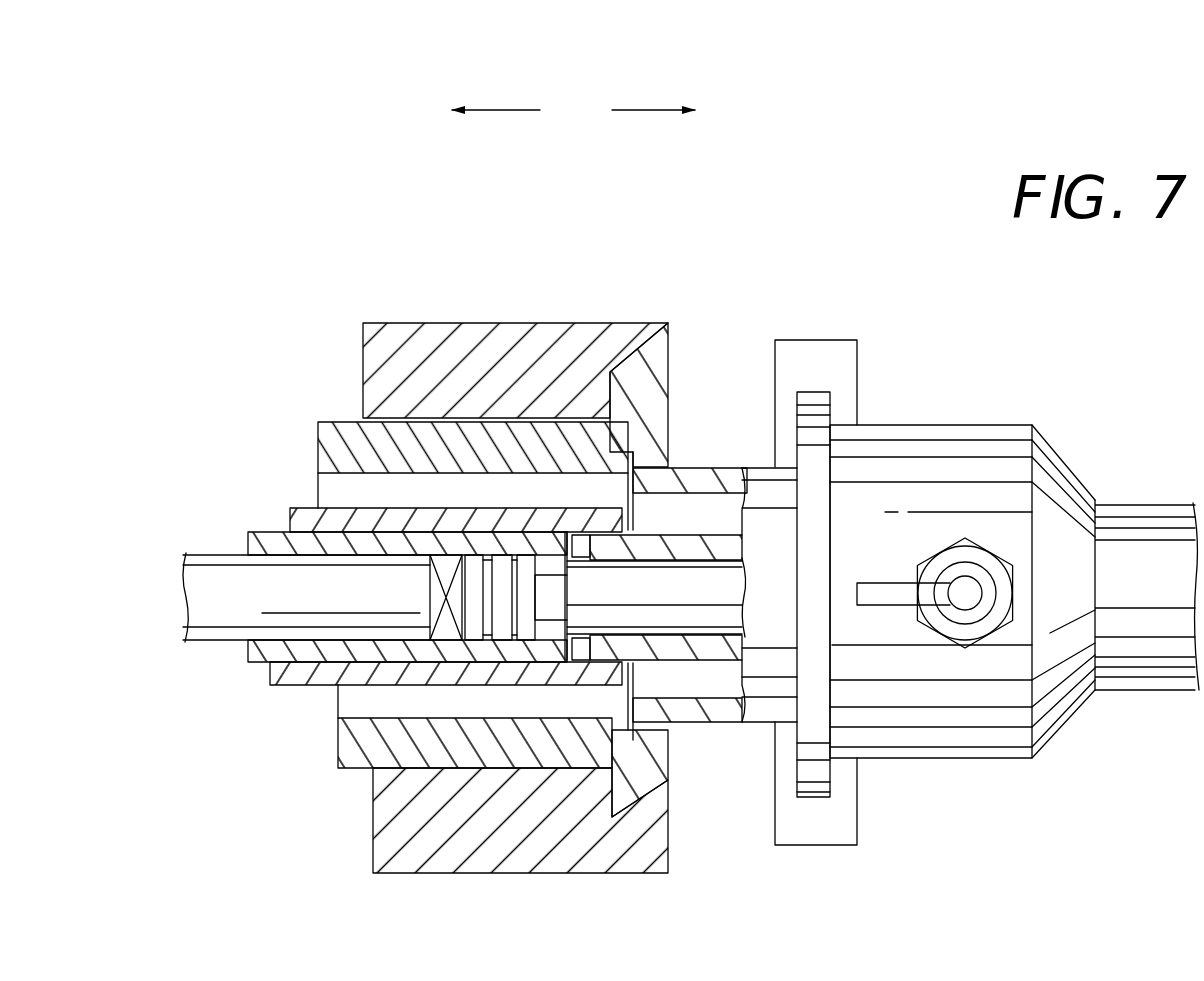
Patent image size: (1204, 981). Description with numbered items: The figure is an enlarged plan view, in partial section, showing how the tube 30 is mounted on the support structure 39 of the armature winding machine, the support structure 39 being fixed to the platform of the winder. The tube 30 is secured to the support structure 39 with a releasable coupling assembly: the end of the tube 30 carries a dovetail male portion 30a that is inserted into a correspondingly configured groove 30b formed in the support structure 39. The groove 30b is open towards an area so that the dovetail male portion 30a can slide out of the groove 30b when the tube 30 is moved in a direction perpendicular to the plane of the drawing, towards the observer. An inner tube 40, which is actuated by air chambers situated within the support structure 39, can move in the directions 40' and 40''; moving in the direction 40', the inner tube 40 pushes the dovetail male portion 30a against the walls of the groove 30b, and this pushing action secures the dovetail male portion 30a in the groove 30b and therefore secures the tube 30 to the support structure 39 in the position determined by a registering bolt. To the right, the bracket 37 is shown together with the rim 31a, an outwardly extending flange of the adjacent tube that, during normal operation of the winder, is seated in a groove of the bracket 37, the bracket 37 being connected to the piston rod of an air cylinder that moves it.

The tube 30 is at (730, 712).
The dovetail male portion 30a is at (650, 418).
The groove 30b is at (618, 370).
The rim 31a is at (828, 781).
The bracket 37 is at (857, 363).
The support structure 39 is at (362, 345).
The inner tube 40 is at (438, 570).
The direction of inner tube movement 40' is at (653, 80).
The opposite direction of inner tube movement 40'' is at (496, 80).